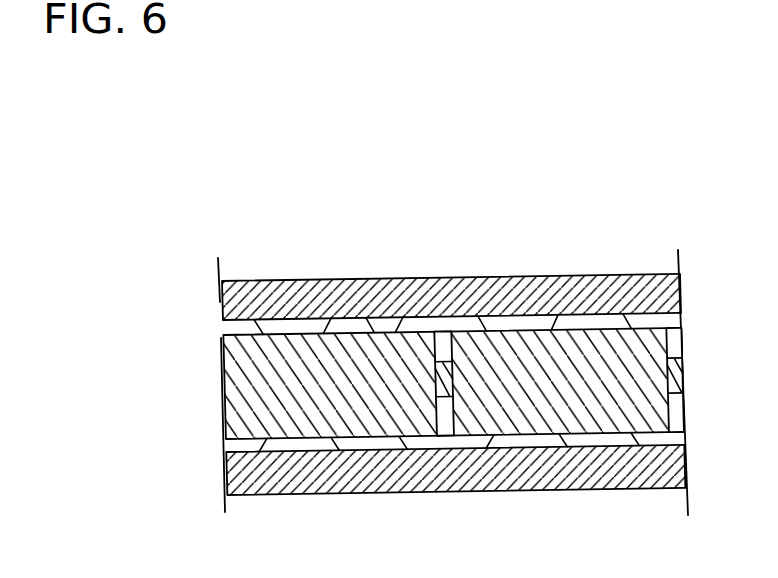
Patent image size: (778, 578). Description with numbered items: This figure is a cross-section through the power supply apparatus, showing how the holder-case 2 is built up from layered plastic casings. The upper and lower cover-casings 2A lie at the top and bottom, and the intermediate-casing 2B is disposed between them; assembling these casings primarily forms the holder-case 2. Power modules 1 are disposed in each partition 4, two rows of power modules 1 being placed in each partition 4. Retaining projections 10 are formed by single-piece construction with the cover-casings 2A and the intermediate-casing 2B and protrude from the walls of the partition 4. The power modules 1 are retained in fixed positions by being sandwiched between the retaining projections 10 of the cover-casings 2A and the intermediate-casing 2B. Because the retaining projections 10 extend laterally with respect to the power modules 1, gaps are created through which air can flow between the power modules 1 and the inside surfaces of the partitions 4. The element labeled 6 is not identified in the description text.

The power module 1 is at (375, 490).
The holder-case 2 is at (395, 384).
The cover-casing 2A is at (238, 304).
The intermediate-casing 2B is at (224, 478).
The partition 4 is at (447, 320).
The insulating layer 6 is at (317, 407).
The retaining projection 10 is at (384, 342).